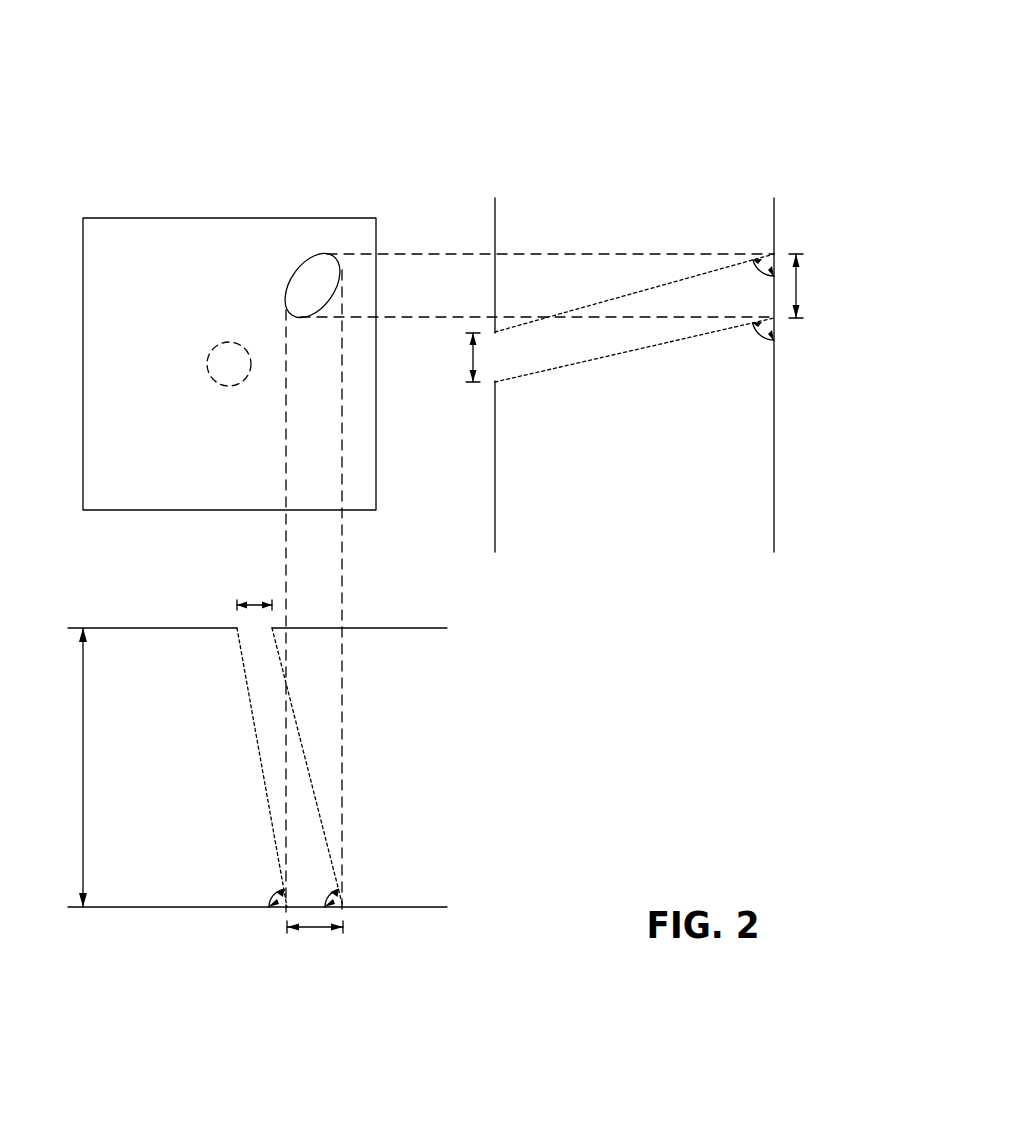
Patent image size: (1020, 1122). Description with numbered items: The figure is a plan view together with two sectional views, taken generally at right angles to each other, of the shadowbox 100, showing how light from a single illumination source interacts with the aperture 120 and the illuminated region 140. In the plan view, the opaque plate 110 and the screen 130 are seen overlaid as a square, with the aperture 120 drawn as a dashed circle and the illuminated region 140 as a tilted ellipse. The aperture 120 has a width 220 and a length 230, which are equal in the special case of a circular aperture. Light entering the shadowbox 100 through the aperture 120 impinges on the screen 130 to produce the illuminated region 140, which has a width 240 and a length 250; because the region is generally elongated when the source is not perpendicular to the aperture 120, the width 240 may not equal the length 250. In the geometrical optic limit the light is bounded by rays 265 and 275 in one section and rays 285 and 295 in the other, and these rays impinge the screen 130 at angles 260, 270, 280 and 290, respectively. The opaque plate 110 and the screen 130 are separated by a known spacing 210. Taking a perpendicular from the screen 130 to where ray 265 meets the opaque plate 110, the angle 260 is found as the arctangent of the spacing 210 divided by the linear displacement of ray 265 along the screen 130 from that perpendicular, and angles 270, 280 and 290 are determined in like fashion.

The shadowbox 100 is at (458, 68).
The opaque plate 110 is at (157, 218).
The aperture 120 is at (207, 364).
The screen 130 is at (777, 520).
The illuminated region 140 is at (297, 271).
The spacing 210 is at (86, 752).
The width 220 is at (257, 604).
The length 230 is at (470, 346).
The width 240 is at (316, 930).
The length 250 is at (803, 283).
The angle 260 is at (274, 898).
The ray 265 is at (253, 715).
The angle 270 is at (331, 898).
The ray 275 is at (292, 713).
The angle 280 is at (757, 338).
The ray 285 is at (585, 362).
The angle 290 is at (757, 277).
The ray 295 is at (646, 289).